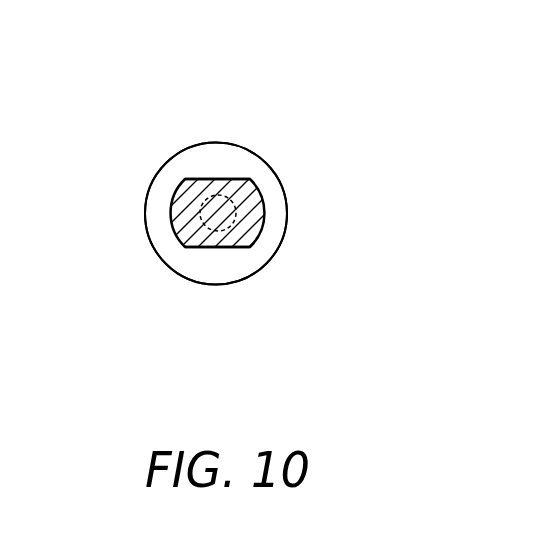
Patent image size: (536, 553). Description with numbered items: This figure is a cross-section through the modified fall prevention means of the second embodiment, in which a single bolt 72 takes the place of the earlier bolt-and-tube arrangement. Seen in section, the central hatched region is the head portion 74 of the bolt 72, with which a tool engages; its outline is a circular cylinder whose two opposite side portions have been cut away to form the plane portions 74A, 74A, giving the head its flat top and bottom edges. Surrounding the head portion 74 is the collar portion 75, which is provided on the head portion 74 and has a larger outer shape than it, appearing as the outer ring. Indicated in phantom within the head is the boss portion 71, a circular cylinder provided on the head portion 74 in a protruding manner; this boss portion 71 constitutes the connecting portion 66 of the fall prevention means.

The bolt 72 is at (290, 265).
The collar portion 75 is at (164, 197).
The head portion 74 is at (263, 216).
The plane portions 74A is at (227, 178).
The boss portion 71 is at (147, 122).
The connecting portion 66 is at (198, 203).